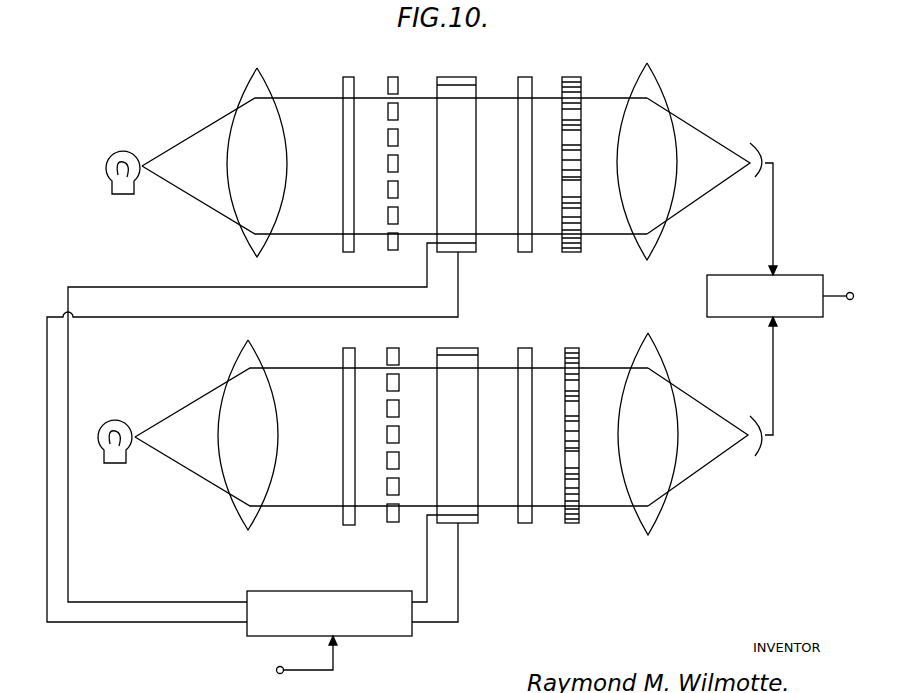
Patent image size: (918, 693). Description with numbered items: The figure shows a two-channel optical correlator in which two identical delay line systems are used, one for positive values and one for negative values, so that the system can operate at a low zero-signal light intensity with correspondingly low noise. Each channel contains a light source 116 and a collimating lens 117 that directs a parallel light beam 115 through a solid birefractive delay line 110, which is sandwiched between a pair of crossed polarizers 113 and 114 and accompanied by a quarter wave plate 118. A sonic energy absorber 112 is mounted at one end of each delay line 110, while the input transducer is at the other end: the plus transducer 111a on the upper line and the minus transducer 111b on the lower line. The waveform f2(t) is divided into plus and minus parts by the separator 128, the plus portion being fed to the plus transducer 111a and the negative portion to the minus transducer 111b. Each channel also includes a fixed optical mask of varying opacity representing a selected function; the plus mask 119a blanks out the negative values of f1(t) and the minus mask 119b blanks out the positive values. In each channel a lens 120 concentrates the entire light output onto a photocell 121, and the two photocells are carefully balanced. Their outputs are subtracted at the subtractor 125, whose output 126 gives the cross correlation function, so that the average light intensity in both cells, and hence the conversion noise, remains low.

The solid birefractive delay line 110 is at (487, 125).
The plus transducer 111a is at (477, 253).
The minus transducer 111b is at (478, 524).
The sonic energy absorber 112 is at (463, 78).
The polarizer 113 is at (342, 158).
The polarizer 114 is at (525, 172).
The parallel light beam 115 is at (301, 120).
The light source 116 is at (123, 152).
The collimating lens 117 is at (243, 156).
The quarter wave plate 118 is at (388, 163).
The plus mask 119a is at (565, 218).
The minus mask 119b is at (565, 493).
The lens 120 is at (660, 123).
The photocell 121 is at (757, 123).
The subtractor 125 is at (707, 293).
The output 126 is at (847, 290).
The separator 128 is at (366, 637).